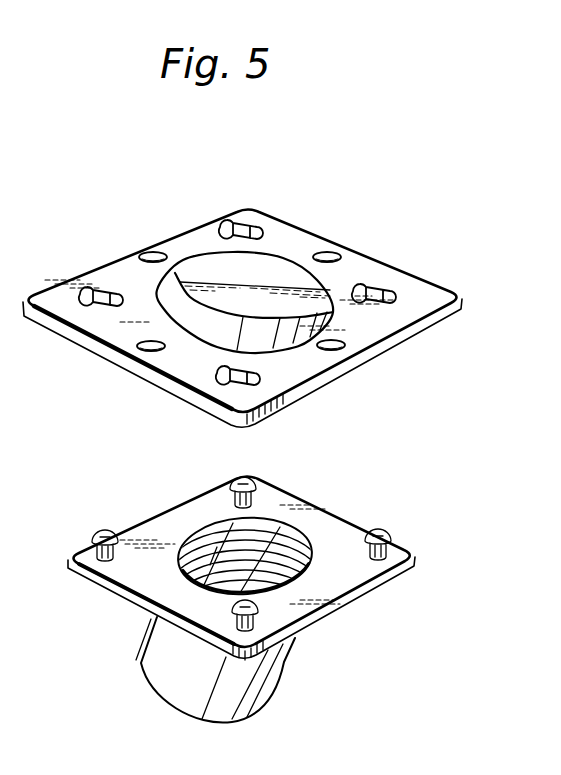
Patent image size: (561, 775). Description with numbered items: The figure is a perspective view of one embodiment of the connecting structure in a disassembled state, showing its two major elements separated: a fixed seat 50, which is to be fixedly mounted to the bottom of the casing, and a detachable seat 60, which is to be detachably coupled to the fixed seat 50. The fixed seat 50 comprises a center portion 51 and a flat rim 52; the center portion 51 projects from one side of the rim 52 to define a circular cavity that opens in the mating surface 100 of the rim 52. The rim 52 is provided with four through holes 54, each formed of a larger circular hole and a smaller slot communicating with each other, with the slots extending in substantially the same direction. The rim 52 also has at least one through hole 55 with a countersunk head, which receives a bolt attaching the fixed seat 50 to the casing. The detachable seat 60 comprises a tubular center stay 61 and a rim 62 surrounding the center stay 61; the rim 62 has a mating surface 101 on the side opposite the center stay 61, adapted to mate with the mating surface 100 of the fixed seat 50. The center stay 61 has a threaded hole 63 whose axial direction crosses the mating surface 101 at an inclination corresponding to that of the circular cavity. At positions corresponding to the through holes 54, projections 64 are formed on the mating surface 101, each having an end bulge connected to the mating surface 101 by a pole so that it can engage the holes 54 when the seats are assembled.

The fixed seat 50 is at (251, 296).
The center portion 51 is at (212, 268).
The flat rim 52 is at (180, 242).
The through holes 54 is at (247, 225).
The through hole 55 is at (153, 252).
The mating surface 100 is at (417, 343).
The detachable seat 60 is at (252, 578).
The tubular center stay 61 is at (157, 650).
The rim 62 is at (206, 500).
The threaded hole 63 is at (267, 537).
The projections 64 is at (100, 530).
The mating surface 101 is at (343, 583).